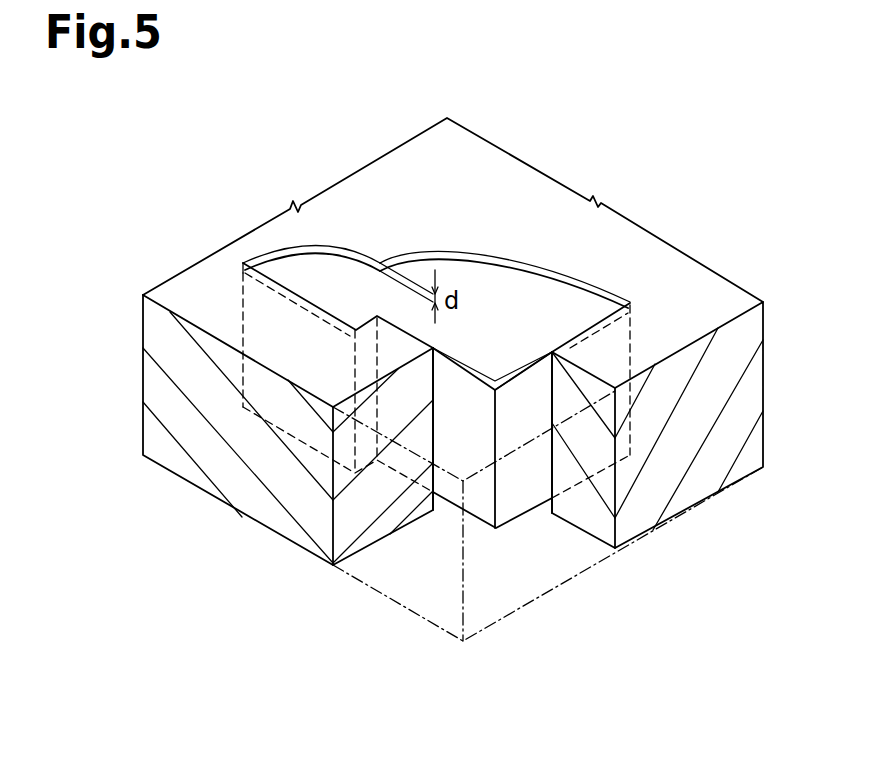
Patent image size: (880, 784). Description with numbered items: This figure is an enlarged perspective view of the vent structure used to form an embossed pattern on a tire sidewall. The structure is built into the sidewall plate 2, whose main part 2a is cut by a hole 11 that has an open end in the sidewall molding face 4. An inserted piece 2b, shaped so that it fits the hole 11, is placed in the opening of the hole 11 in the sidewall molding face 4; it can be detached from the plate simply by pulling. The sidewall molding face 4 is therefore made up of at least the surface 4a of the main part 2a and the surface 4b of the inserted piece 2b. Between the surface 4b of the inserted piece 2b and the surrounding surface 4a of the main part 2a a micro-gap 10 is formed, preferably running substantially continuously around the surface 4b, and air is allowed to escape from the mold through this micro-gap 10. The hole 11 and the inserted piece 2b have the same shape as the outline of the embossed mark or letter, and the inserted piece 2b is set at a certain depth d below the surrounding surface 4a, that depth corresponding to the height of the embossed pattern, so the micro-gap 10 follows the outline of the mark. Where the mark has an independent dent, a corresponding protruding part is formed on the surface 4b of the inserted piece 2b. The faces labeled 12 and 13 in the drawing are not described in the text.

The sidewall plate 2 is at (453, 411).
The main part of the sidewall plate 2a is at (350, 523).
The inserted piece 2b is at (455, 492).
The sidewall molding face 4 is at (436, 176).
The surface of the main part 4a is at (487, 193).
The surface of the inserted piece 4b is at (497, 305).
The micro-gap 10 is at (547, 452).
The hole 11 is at (280, 247).
The side face 12 is at (525, 398).
The wall face 13 is at (437, 417).